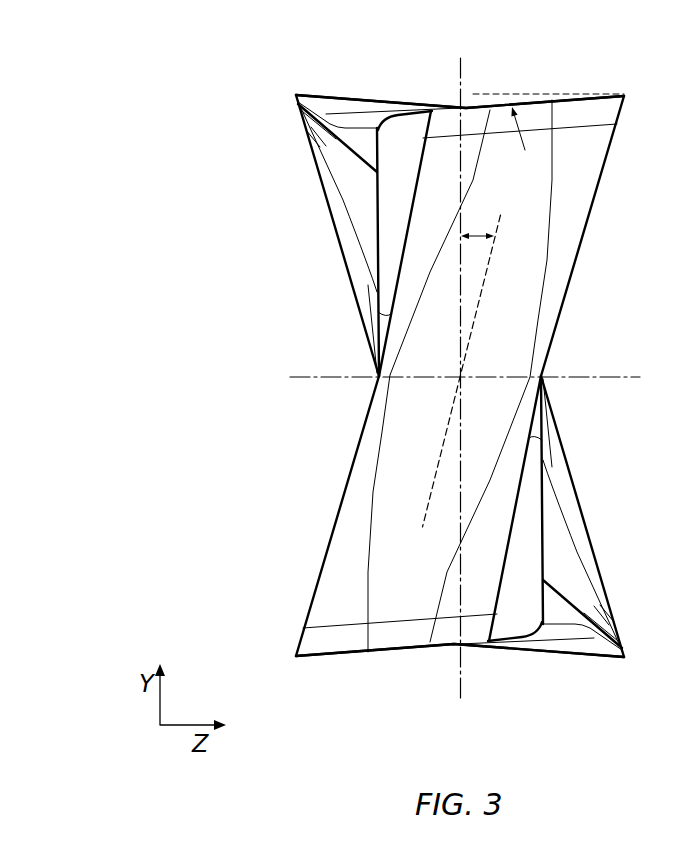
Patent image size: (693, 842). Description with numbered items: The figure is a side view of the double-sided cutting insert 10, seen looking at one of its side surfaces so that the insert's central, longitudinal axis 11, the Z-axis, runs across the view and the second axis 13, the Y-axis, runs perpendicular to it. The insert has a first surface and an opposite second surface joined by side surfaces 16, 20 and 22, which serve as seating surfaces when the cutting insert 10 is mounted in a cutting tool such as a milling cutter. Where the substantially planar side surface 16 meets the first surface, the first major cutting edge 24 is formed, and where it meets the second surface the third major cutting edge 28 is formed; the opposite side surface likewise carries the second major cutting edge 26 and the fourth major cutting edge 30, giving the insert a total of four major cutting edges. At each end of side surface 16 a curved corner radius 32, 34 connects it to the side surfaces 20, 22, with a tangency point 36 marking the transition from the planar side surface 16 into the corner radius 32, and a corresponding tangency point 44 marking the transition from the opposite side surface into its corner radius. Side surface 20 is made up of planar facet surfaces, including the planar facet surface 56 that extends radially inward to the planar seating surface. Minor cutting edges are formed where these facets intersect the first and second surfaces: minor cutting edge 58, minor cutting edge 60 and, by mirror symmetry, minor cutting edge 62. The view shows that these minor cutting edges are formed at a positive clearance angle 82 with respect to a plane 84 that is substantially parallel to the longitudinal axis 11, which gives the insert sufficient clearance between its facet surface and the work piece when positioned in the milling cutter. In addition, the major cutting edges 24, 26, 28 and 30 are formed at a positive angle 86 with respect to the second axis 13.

The cutting insert 10 is at (148, 106).
The central, longitudinal axis 11 is at (316, 376).
The second axis 13 is at (459, 77).
The side surface 16 is at (537, 298).
The side surface 20 is at (349, 59).
The side surface 22 is at (562, 678).
The first major cutting edge 24 is at (352, 468).
The second major cutting edge 26 is at (338, 243).
The third major cutting edge 28 is at (597, 213).
The fourth major cutting edge 30 is at (588, 525).
The corner radius 32 is at (613, 105).
The corner radius 34 is at (354, 651).
The tangency point 36 is at (596, 138).
The tangency point 44 is at (334, 616).
The planar facet surface 56 is at (369, 121).
The minor cutting edge 58 is at (625, 95).
The minor cutting edge 60 is at (297, 94).
The minor cutting edge 62 is at (297, 658).
The positive clearance angle 82 is at (514, 86).
The plane 84 is at (552, 95).
The positive angle 86 is at (481, 232).